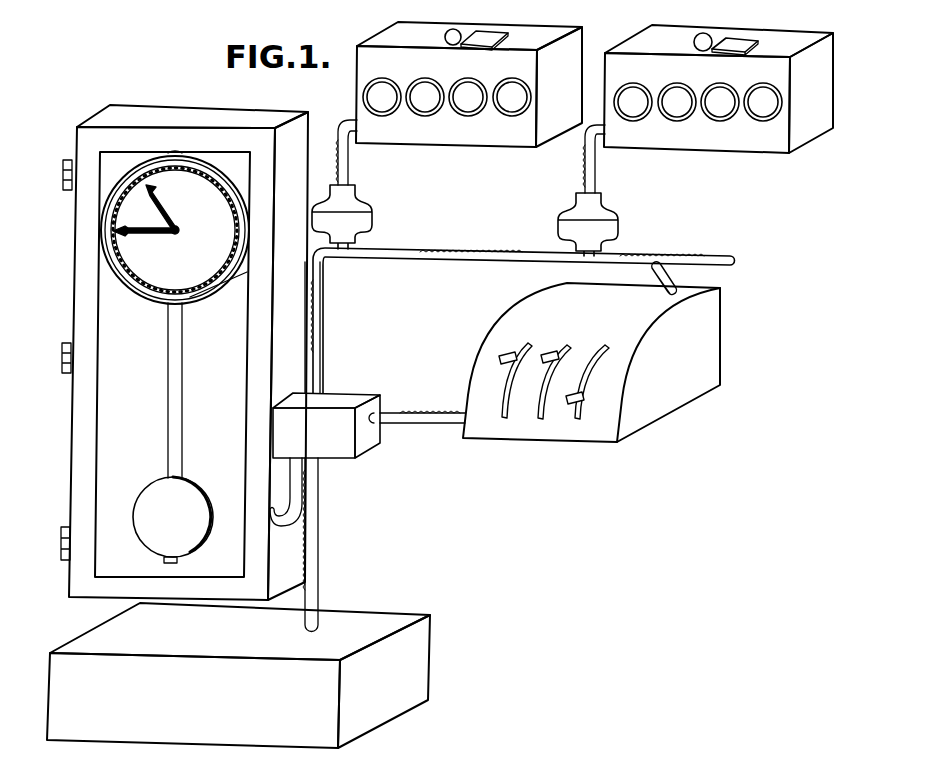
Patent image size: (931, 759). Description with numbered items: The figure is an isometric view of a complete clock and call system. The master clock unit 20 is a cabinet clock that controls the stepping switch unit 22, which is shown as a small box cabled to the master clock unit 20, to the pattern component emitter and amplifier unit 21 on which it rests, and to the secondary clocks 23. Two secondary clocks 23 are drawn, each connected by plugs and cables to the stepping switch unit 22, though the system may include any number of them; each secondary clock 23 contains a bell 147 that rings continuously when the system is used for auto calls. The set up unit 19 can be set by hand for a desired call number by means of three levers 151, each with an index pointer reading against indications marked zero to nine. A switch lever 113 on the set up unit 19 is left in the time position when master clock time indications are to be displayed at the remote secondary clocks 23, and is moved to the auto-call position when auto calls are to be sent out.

The set up unit 19 is at (663, 385).
The master clock unit 20 is at (184, 347).
The pattern component emitter and amplifier unit 21 is at (365, 620).
The stepping switch unit 22 is at (363, 442).
The secondary clocks 23 is at (475, 127).
The switch lever 113 is at (678, 278).
The bell 147 is at (492, 35).
The levers 151 is at (573, 397).